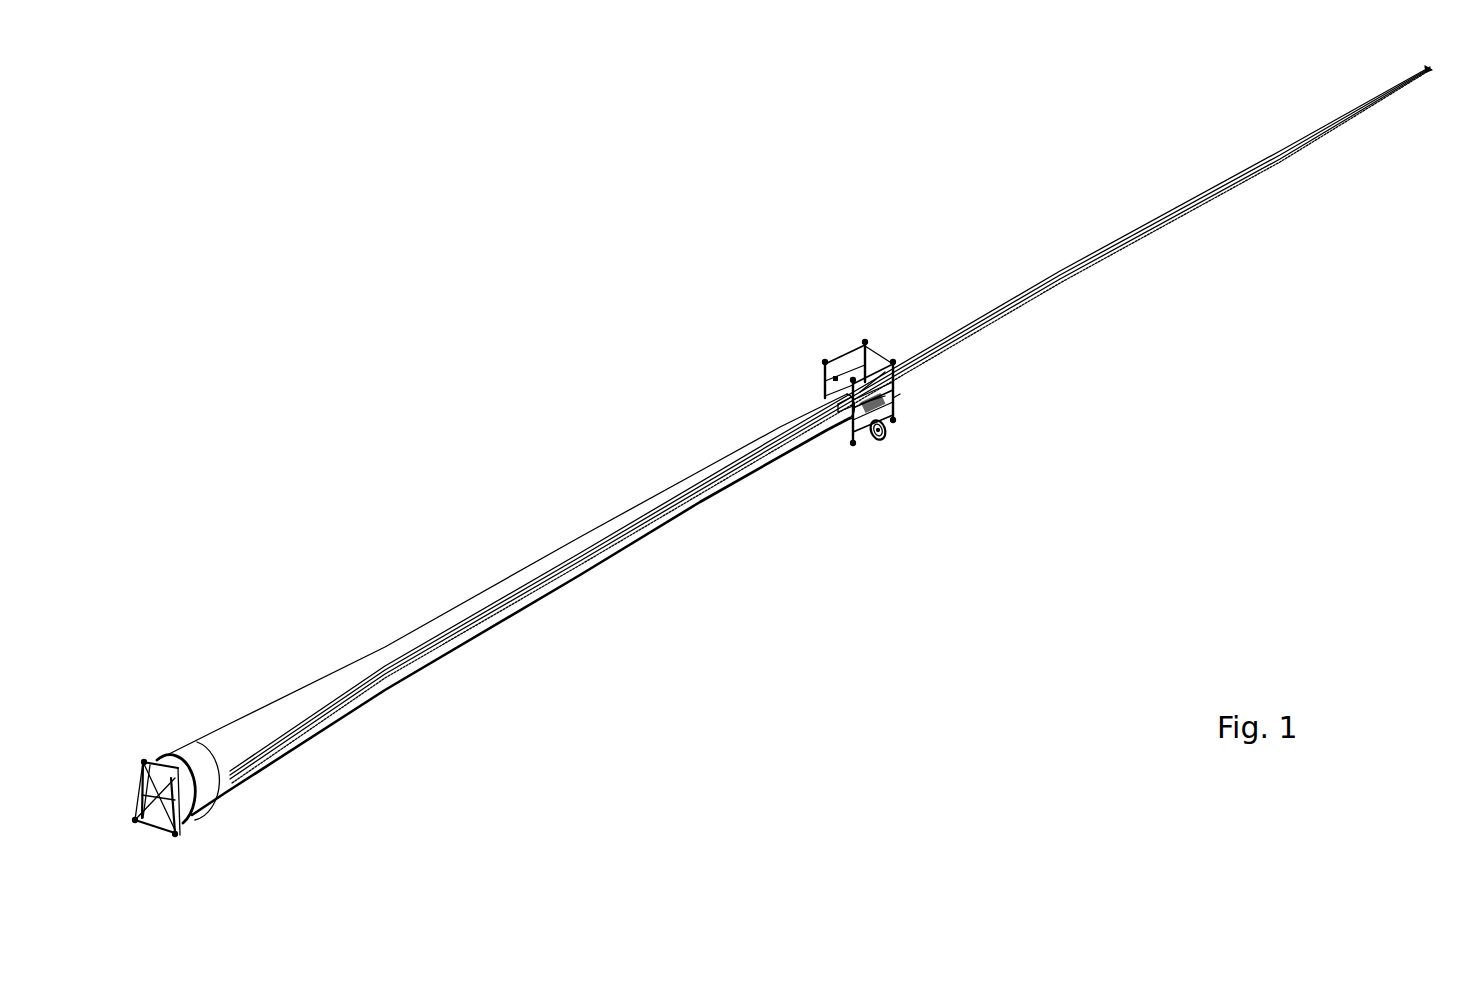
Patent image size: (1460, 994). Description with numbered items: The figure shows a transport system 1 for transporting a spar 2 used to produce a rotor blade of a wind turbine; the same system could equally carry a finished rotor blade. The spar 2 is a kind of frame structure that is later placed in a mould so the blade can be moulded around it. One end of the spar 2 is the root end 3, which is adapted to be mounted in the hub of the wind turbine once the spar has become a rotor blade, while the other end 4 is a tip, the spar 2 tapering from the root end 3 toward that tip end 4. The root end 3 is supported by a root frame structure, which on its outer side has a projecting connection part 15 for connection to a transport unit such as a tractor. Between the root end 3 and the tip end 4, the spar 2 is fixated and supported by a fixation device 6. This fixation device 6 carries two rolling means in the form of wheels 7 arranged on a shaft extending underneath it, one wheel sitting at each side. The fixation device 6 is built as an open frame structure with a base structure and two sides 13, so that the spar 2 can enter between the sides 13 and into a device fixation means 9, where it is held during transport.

The transport system 1 is at (1090, 125).
The spar 2 is at (1078, 281).
The root end 3 is at (185, 762).
The tip end 4 is at (1425, 73).
The fixation device 6 is at (870, 378).
The wheels 7 is at (882, 440).
The device fixation means 9 is at (863, 344).
The sides 13 is at (823, 362).
The projecting connection part 15 is at (135, 817).